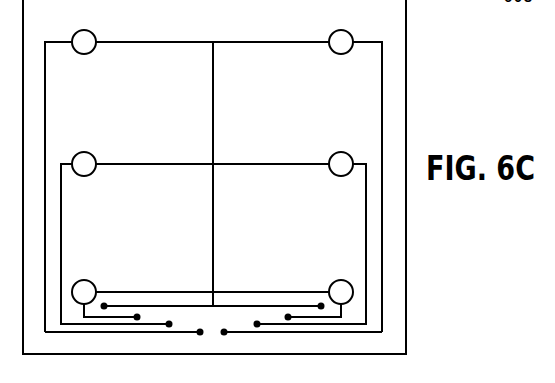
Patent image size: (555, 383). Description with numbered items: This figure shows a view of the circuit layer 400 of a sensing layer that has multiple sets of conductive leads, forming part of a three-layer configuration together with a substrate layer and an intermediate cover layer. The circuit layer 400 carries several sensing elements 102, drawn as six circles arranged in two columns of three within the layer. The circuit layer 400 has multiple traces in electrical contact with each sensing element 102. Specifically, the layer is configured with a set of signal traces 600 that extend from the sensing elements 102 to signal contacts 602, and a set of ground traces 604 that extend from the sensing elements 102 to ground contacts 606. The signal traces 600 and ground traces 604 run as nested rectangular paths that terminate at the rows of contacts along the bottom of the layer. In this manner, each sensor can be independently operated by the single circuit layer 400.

The sensing element 102 is at (89, 31).
The circuit layer 400 is at (235, 177).
The signal traces 600 is at (213, 187).
The signal contacts 602 is at (213, 345).
The ground traces 604 is at (232, 174).
The ground contacts 606 is at (105, 302).